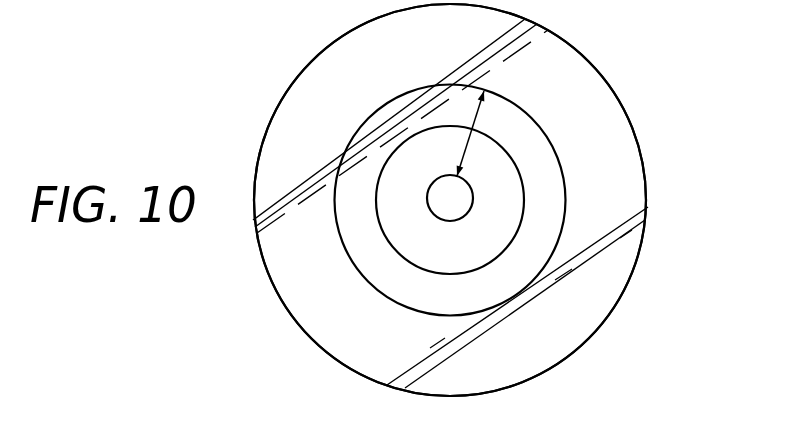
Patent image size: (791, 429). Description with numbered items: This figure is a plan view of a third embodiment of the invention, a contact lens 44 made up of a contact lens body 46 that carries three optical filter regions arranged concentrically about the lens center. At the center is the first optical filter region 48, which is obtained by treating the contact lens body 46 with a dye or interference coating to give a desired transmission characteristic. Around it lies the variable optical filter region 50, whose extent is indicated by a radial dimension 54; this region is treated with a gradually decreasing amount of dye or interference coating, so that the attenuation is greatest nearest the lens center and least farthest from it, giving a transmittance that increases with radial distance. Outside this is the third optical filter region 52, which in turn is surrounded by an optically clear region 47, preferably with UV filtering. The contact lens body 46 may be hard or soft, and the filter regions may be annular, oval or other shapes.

The contact lens 44 is at (668, 140).
The contact lens body 46 is at (576, 50).
The optically clear region 47 is at (572, 104).
The first optical filter region 48 is at (462, 213).
The variable optical filter region 50 is at (496, 245).
The third optical filter region 52 is at (480, 305).
The radial dimension 54 is at (468, 147).